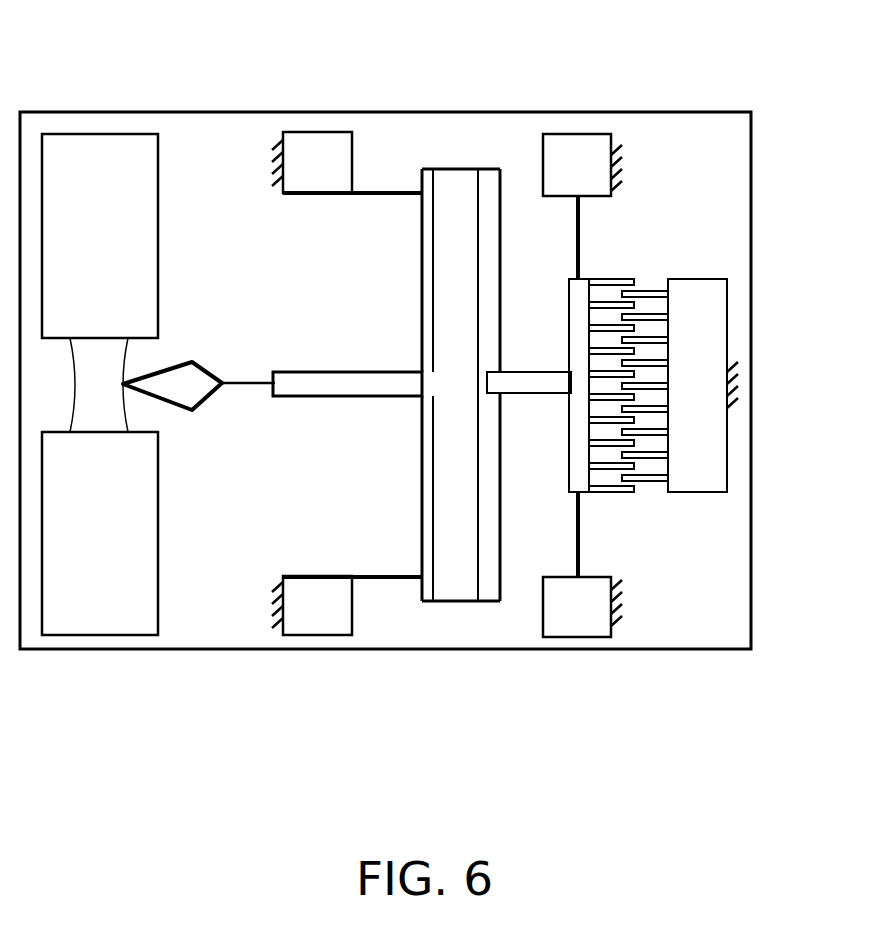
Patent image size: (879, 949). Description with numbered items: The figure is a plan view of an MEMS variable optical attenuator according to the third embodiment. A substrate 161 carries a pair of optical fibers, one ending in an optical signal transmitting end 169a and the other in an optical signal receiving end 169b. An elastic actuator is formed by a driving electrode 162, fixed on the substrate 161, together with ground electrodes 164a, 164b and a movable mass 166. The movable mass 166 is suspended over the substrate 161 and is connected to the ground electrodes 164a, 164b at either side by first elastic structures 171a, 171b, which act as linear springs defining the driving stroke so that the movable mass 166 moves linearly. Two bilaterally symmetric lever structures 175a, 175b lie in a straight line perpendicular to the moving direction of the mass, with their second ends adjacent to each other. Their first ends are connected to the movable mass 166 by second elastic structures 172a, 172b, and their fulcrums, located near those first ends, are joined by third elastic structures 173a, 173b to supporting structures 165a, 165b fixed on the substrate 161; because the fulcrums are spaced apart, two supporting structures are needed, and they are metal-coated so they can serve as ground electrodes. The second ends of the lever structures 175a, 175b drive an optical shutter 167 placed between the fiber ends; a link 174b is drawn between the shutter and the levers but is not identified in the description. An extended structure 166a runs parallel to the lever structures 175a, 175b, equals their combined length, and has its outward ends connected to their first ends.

The substrate 161 is at (751, 636).
The driving electrode 162 is at (718, 445).
The ground electrode 164a is at (568, 140).
The ground electrode 164b is at (576, 631).
The supporting structure 165a is at (312, 147).
The supporting structure 165b is at (306, 625).
The movable mass 166 is at (580, 288).
The extended structure 166a is at (490, 594).
The optical shutter 167 is at (185, 362).
The optical signal transmitting end 169a is at (88, 157).
The optical signal receiving end 169b is at (99, 625).
The first elastic structure 171a is at (578, 232).
The first elastic structure 171b is at (578, 533).
The second elastic structure 172a is at (460, 168).
The second elastic structure 172b is at (460, 601).
The third elastic structure 173a is at (373, 192).
The third elastic structure 173b is at (384, 578).
The link bar 174b is at (347, 399).
The first lever structure 175a is at (422, 300).
The second lever structure 175b is at (423, 522).